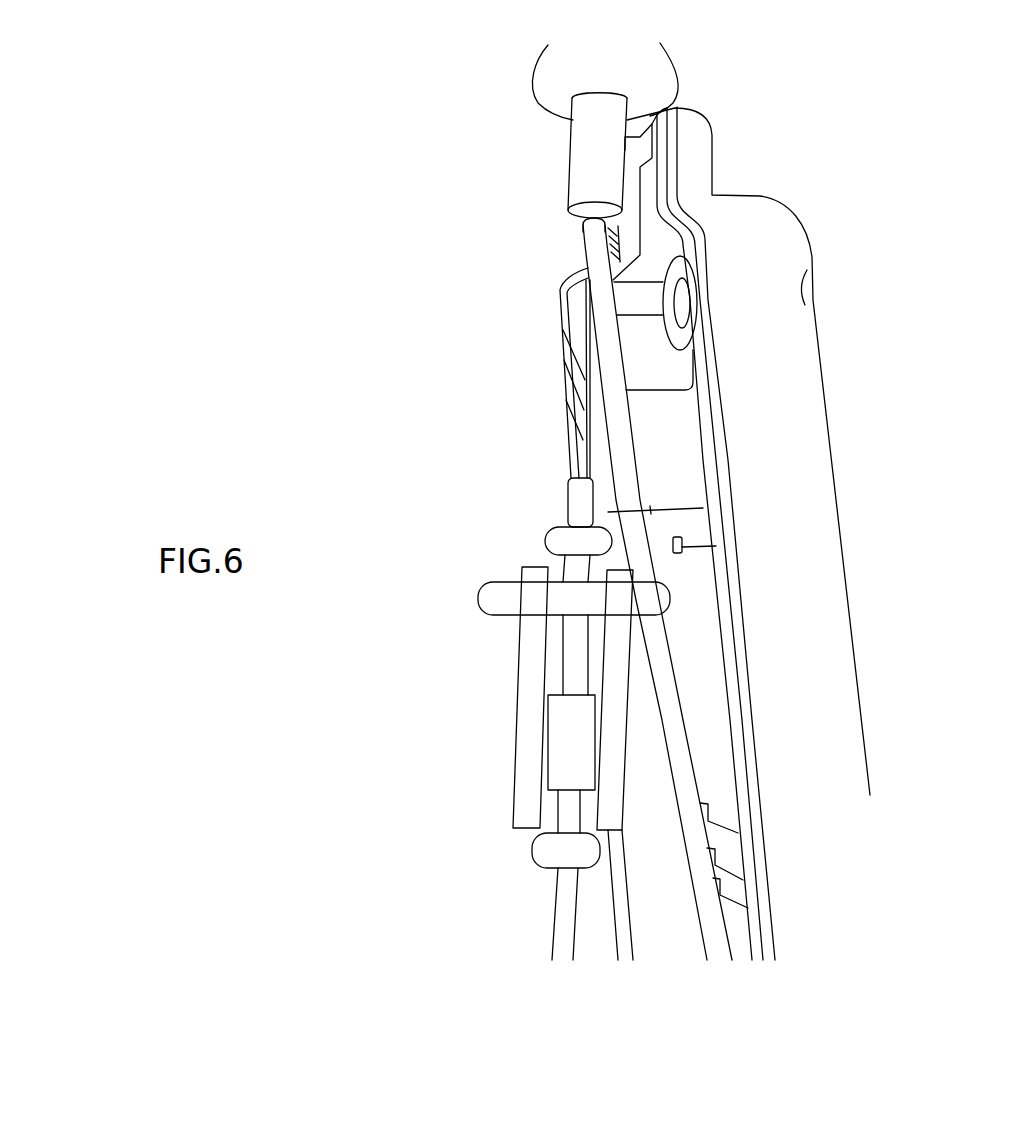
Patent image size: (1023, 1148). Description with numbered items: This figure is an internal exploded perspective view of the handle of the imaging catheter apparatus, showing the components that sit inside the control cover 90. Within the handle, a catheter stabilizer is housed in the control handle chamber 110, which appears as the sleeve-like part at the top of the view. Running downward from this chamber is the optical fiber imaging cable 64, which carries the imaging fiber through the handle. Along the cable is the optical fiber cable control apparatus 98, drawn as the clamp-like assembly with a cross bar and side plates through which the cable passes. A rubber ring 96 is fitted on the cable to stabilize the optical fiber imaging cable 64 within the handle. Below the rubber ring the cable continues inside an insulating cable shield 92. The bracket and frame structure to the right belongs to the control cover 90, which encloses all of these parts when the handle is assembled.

The control handle chamber 110 is at (597, 132).
The optical fiber imaging cable 64 is at (582, 358).
The optical fiber cable control apparatus 98 is at (613, 675).
The rubber ring 96 is at (570, 748).
The insulating cable shield 92 is at (567, 908).
The control cover 90 is at (818, 850).